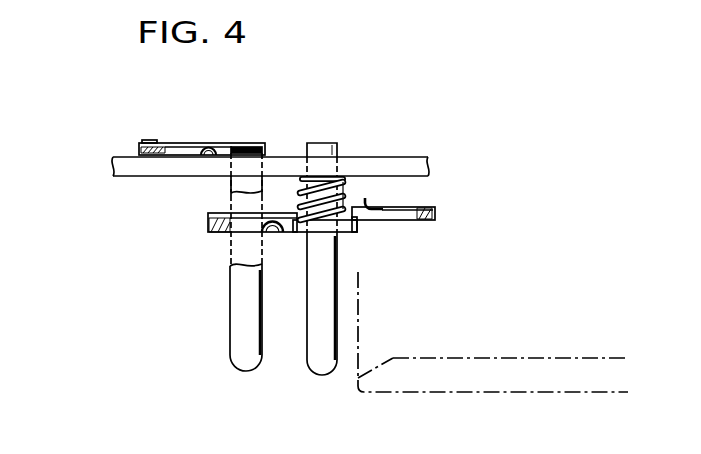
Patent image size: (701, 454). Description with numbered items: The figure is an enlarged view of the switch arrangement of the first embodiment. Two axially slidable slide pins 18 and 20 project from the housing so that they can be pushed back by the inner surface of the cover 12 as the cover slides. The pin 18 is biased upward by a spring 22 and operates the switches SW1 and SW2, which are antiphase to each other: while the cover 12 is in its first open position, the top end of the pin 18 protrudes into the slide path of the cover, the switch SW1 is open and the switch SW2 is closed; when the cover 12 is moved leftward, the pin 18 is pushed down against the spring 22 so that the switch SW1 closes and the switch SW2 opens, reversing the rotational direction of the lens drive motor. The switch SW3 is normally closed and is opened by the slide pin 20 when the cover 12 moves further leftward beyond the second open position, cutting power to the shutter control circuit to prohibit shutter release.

The switch SW3 is at (182, 142).
The switch SW2 is at (221, 233).
The switch SW1 is at (411, 221).
The spring 22 is at (346, 190).
The slide pin 20 is at (242, 368).
The slide pin 18 is at (316, 366).
The cover 12 is at (484, 394).